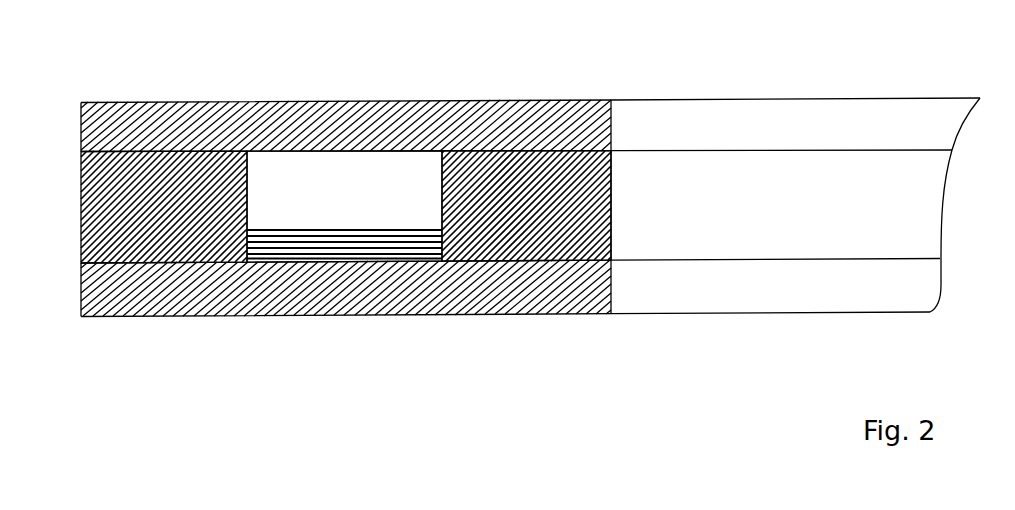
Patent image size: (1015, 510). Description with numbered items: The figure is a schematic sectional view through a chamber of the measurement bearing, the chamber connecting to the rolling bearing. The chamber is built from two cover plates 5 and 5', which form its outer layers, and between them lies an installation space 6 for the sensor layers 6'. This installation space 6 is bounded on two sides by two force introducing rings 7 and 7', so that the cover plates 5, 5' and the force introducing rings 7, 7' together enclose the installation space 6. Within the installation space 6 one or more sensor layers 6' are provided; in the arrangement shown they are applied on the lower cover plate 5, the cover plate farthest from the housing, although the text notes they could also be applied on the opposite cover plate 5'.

The cover plate 5 is at (346, 252).
The cover plate 5' is at (346, 332).
The force introducing ring 7 is at (203, 150).
The force introducing ring 7' is at (482, 149).
The installation space 6 is at (292, 301).
The sensor layers 6' is at (344, 341).